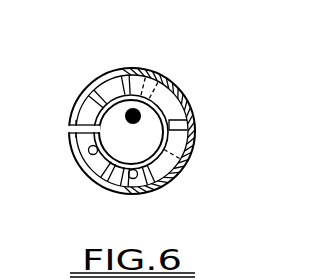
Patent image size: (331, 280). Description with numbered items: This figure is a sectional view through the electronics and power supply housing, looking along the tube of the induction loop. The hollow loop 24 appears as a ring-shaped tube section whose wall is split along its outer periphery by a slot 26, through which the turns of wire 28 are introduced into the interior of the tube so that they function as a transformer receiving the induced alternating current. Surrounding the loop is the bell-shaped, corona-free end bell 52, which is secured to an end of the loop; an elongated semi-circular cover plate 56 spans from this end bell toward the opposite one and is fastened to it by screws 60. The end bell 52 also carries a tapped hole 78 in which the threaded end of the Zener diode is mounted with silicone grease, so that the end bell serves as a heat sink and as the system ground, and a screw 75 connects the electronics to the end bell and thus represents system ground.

The end bell 52 is at (158, 57).
The cover plate 56 is at (194, 135).
The hollow loop 24 is at (188, 156).
The slot 26 is at (82, 126).
The turns of wire 28 is at (141, 115).
The screws 60 is at (122, 67).
The screw 75 is at (130, 178).
The tapped hole 78 is at (91, 152).